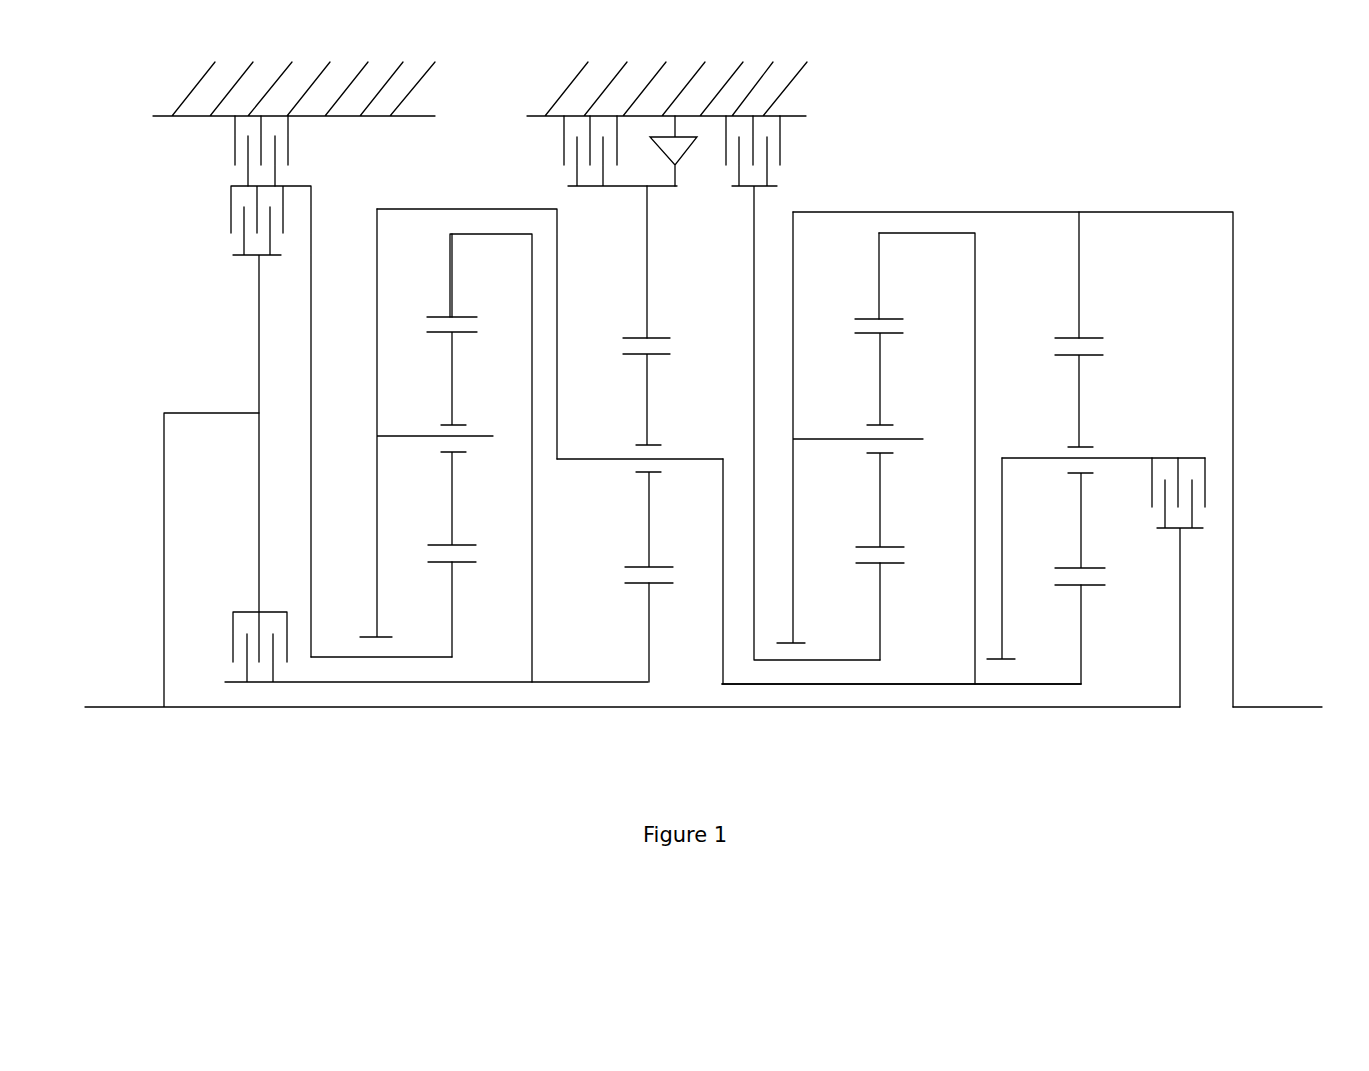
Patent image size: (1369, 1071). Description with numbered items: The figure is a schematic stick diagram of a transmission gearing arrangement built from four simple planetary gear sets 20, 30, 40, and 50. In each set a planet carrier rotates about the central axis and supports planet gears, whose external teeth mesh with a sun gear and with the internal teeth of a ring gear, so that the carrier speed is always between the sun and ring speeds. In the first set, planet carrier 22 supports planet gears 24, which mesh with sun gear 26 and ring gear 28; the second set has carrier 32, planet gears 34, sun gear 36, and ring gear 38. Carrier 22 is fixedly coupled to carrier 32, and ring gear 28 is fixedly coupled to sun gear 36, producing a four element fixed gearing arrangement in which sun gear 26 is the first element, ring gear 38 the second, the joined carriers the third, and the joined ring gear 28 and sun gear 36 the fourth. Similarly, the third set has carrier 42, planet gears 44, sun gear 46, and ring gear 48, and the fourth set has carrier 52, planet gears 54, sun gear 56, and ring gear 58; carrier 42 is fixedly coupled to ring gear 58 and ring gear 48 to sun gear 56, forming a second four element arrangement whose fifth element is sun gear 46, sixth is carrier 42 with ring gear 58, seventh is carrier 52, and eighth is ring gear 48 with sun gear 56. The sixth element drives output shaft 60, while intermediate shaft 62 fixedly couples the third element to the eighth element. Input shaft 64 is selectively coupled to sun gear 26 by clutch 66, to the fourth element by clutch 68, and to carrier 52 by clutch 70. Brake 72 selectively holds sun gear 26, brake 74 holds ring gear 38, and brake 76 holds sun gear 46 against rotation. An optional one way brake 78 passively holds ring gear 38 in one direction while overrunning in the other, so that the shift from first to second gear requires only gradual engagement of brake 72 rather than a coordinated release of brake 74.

The simple planetary gear set 20 is at (434, 485).
The planet carrier 22 is at (378, 453).
The planet gears 24 is at (455, 388).
The sun gear 26 is at (452, 600).
The ring gear 28 is at (452, 283).
The simple planetary gear set 30 is at (814, 475).
The carrier 32 is at (575, 460).
The planet gears 34 is at (650, 410).
The sun gear 36 is at (645, 618).
The ring gear 38 is at (647, 303).
The simple planetary gear set 40 is at (1005, 486).
The carrier 42 is at (828, 440).
The planet gears 44 is at (884, 390).
The sun gear 46 is at (878, 600).
The ring gear 48 is at (880, 283).
The simple planetary gear set 50 is at (1096, 488).
The carrier 52 is at (1015, 458).
The planet gears 54 is at (1082, 410).
The sun gear 56 is at (1080, 620).
The ring gear 58 is at (1080, 306).
The output shaft 60 is at (1290, 705).
The intermediate shaft 62 is at (926, 686).
The input shaft 64 is at (287, 705).
The clutch 66 is at (231, 212).
The clutch 68 is at (233, 648).
The clutch 70 is at (1188, 458).
The brake 72 is at (288, 143).
The brake 74 is at (565, 145).
The brake 76 is at (780, 140).
The one way brake 78 is at (683, 157).